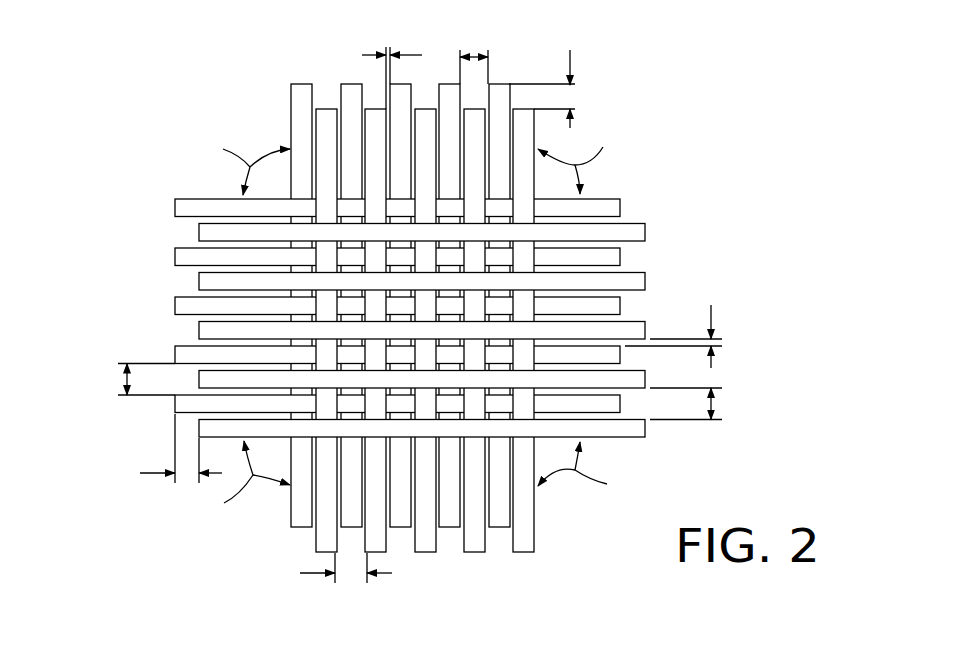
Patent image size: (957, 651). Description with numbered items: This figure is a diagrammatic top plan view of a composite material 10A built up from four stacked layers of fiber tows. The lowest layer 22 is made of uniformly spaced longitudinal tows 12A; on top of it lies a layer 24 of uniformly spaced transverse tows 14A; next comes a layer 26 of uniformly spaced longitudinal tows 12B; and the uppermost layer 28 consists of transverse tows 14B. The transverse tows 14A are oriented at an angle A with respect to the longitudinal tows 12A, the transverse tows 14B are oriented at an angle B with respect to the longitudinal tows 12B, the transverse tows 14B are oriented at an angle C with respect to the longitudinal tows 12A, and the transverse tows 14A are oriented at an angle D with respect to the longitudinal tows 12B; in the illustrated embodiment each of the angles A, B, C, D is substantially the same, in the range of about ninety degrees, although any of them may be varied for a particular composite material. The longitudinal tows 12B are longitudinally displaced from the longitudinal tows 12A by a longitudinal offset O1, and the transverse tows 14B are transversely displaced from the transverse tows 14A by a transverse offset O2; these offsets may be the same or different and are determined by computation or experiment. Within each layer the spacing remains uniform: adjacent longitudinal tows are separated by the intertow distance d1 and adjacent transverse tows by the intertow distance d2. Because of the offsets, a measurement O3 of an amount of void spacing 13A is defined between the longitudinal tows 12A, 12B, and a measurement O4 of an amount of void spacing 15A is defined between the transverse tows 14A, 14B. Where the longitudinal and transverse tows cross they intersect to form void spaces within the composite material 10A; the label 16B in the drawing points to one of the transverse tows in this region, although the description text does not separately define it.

The composite material 10A is at (404, 310).
The longitudinal tows 12A is at (298, 82).
The longitudinal tows 12B is at (323, 107).
The void spacing 13A is at (486, 524).
The transverse tows 14A is at (175, 201).
The transverse tows 14B is at (199, 230).
The void spacing 15A is at (402, 236).
The weft tape 16B is at (312, 346).
The layer 22 is at (264, 296).
The layer 24 is at (386, 190).
The layer 26 is at (556, 503).
The layer 28 is at (656, 285).
The angle A is at (249, 166).
The angle B is at (581, 469).
The angle C is at (250, 480).
The angle D is at (576, 157).
The longitudinal offset O1 is at (572, 51).
The transverse offset O2 is at (153, 473).
The measurement of void spacing O3 is at (412, 53).
The measurement of void spacing O4 is at (712, 312).
The intertow distance d1 is at (474, 55).
The intertow distance d2 is at (716, 405).